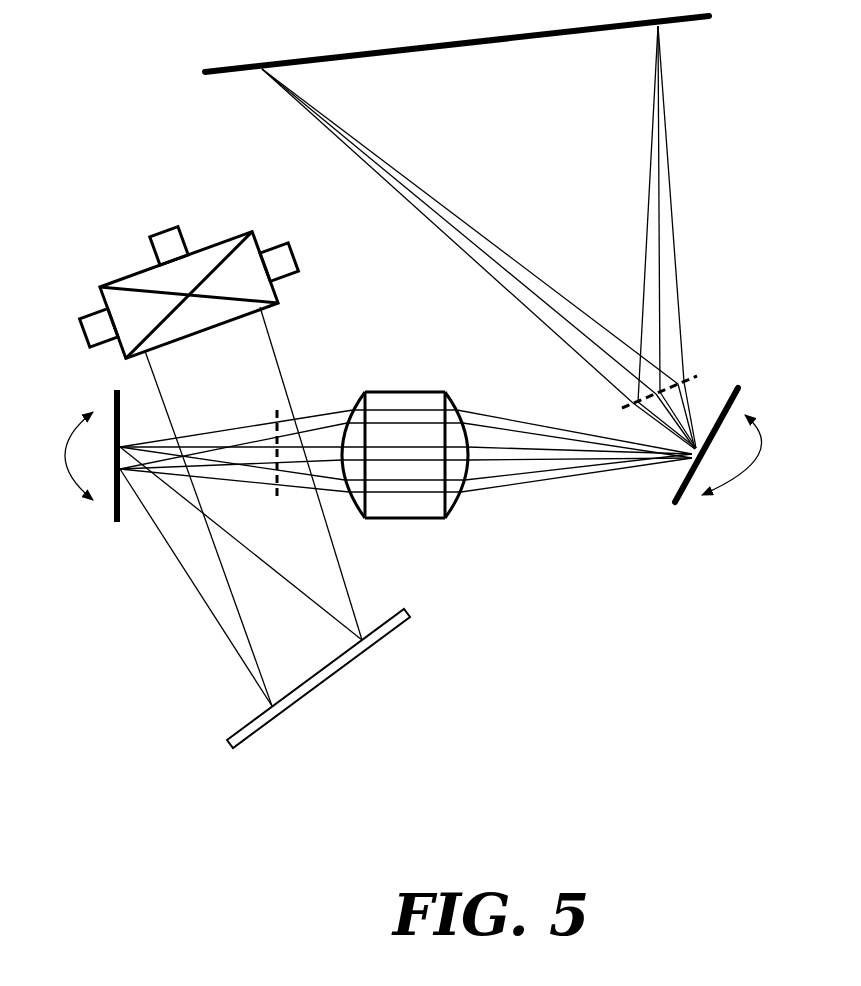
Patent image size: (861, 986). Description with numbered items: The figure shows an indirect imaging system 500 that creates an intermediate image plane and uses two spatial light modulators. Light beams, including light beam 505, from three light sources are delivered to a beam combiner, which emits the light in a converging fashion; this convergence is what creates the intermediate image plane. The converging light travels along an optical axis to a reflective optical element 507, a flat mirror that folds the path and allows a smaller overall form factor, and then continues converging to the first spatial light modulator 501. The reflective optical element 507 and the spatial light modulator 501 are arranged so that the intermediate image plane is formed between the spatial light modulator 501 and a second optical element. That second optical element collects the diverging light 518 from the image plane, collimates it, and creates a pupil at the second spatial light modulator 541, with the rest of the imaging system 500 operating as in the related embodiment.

The indirect imaging system 500 is at (762, 257).
The first spatial light modulator 501 is at (115, 510).
The light beam 505 is at (243, 632).
The reflective optical element 507 is at (348, 668).
The diverging light 518 is at (290, 502).
The second spatial light modulator 541 is at (740, 398).